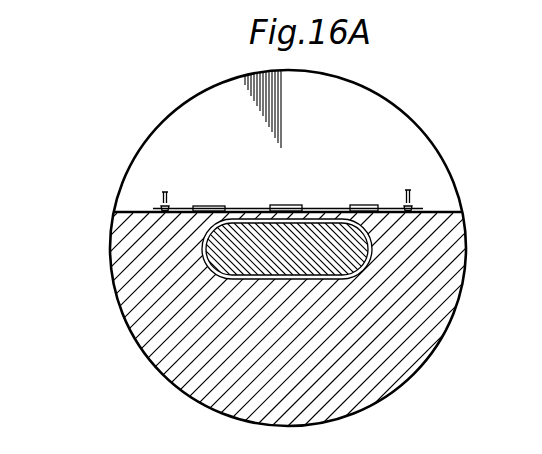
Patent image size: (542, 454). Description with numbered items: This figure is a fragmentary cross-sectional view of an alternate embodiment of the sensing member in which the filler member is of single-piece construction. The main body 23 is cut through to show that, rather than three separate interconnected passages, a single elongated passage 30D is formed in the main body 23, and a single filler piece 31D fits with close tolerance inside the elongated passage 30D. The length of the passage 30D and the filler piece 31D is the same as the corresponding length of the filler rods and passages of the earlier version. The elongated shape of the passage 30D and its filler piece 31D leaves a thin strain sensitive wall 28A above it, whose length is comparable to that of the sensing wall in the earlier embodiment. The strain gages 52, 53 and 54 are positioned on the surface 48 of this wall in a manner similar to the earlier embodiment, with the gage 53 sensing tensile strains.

The main body 23 is at (110, 262).
The surface 48 is at (434, 211).
The strain sensitive wall 28A is at (324, 208).
The elongated passage 30D is at (372, 241).
The filler piece 31D is at (372, 252).
The strain gage 52 is at (208, 205).
The strain gage 53 is at (280, 205).
The strain gage 54 is at (363, 205).